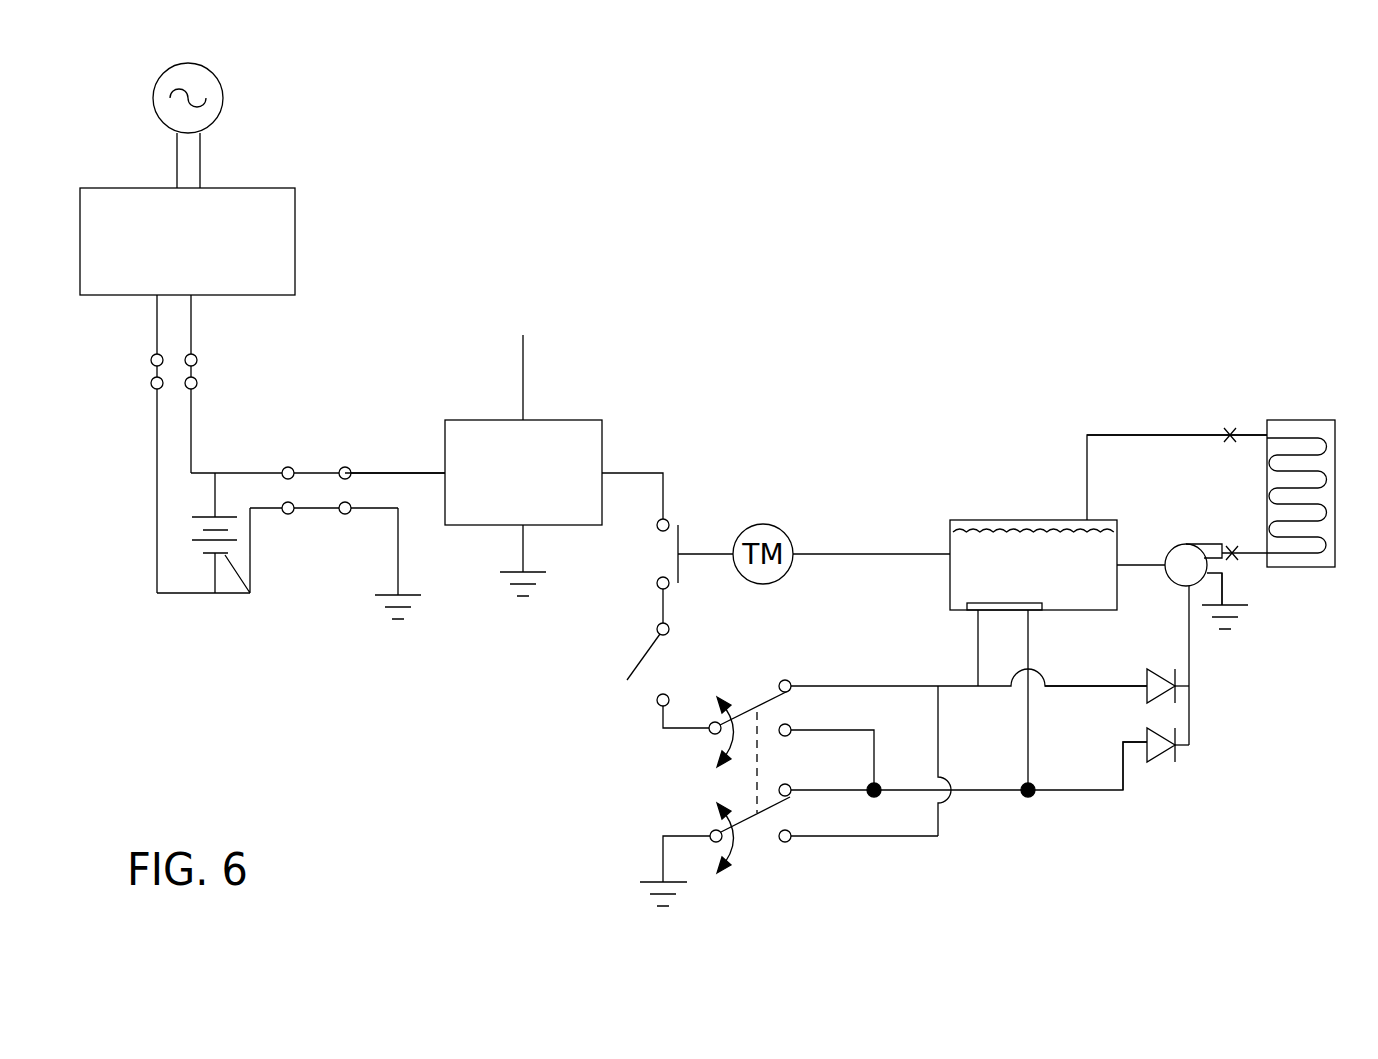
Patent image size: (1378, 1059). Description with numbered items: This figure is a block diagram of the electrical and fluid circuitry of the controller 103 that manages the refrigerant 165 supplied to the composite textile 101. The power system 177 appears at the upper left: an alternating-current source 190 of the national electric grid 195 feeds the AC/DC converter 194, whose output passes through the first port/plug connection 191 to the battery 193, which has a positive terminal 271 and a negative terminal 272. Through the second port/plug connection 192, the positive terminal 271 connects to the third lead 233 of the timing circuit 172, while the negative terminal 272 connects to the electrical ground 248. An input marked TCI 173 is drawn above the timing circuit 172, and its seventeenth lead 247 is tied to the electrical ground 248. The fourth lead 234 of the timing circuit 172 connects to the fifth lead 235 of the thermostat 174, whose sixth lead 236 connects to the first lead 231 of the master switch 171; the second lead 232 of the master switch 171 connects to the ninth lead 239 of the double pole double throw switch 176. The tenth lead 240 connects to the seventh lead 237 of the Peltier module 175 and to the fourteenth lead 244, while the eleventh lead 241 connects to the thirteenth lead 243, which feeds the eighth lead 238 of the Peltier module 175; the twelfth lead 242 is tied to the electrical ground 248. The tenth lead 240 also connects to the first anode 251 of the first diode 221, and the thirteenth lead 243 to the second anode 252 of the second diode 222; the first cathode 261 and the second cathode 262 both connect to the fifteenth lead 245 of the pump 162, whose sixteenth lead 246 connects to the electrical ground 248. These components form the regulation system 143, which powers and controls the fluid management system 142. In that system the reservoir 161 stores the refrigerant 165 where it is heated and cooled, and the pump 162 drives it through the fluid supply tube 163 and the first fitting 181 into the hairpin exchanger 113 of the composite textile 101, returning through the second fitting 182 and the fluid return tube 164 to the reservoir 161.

The composite textile 101 is at (1300, 420).
The controller 103 is at (1215, 300).
The hairpin exchanger 113 is at (1323, 460).
The fluid management system 142 is at (1100, 428).
The regulation system 143 is at (722, 330).
The reservoir 161 is at (1008, 520).
The pump 162 is at (1193, 544).
The fluid supply tube 163 is at (1225, 558).
The fluid return tube 164 is at (1175, 435).
The refrigerant 165 is at (988, 530).
The master switch 171 is at (633, 663).
The timing circuit 172 is at (563, 420).
The timing control input 173 is at (523, 300).
The thermostat 174 is at (687, 532).
The Peltier module 175 is at (985, 603).
The double pole double throw switch 176 is at (707, 788).
The power system 177 is at (338, 322).
The first fitting 181 is at (1232, 545).
The second fitting 182 is at (1230, 428).
The AC power source 190 is at (223, 98).
The first port/plug connection 191 is at (200, 373).
The second port/plug connection 192 is at (317, 462).
The battery 193 is at (250, 593).
The AC/DC converter 194 is at (295, 240).
The national electric grid 195 is at (200, 62).
The first diode 221 is at (1150, 668).
The second diode 222 is at (1162, 755).
The first lead 231 is at (669, 629).
The second lead 232 is at (677, 700).
The third lead 233 is at (397, 473).
The fourth lead 234 is at (628, 473).
The fifth lead 235 is at (657, 527).
The sixth lead 236 is at (658, 587).
The seventh lead 237 is at (978, 650).
The eighth lead 238 is at (1030, 640).
The ninth lead 239 is at (705, 735).
The tenth lead 240 is at (792, 680).
The eleventh lead 241 is at (792, 726).
The twelfth lead 242 is at (707, 822).
The thirteenth lead 243 is at (830, 773).
The fourteenth lead 244 is at (785, 845).
The fifteenth lead 245 is at (1187, 596).
The sixteenth lead 246 is at (1248, 605).
The seventeenth lead 247 is at (523, 543).
The electrical ground 248 is at (408, 620).
The first anode 251 is at (1123, 690).
The second anode 252 is at (1127, 745).
The first cathode 261 is at (1190, 686).
The second cathode 262 is at (1190, 745).
The positive terminal 271 is at (215, 493).
The negative terminal 272 is at (217, 578).